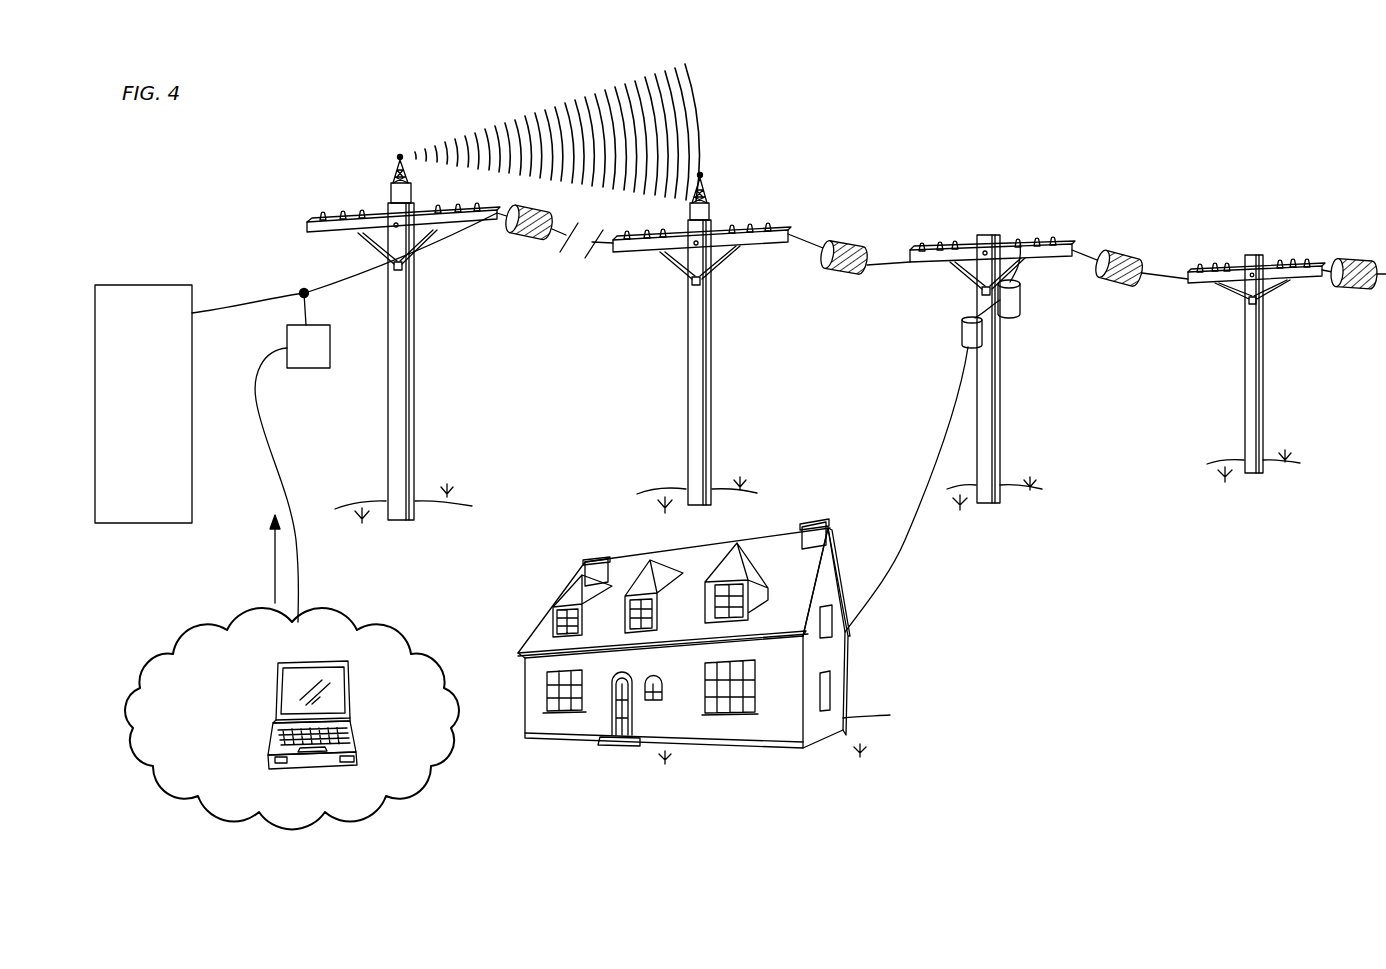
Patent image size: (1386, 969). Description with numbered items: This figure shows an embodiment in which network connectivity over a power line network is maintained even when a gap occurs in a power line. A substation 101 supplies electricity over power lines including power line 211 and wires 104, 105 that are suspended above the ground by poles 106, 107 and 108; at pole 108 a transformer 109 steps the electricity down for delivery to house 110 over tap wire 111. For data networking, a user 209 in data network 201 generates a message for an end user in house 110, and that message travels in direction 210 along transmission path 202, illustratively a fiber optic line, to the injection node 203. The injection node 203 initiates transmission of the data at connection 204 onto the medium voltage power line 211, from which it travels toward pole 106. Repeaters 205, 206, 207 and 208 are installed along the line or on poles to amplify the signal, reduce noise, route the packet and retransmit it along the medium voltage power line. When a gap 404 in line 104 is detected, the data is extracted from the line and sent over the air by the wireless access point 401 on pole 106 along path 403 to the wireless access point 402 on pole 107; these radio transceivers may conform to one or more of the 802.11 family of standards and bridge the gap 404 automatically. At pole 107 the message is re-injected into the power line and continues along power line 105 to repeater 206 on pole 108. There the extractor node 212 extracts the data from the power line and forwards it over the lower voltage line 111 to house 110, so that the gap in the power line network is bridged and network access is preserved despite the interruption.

The substation 101 is at (130, 523).
The wire 104 is at (662, 252).
The wire 105 is at (873, 268).
The pole 106 is at (416, 440).
The pole 107 is at (712, 431).
The pole 108 is at (1001, 455).
The transformer 109 is at (1021, 302).
The house 110 is at (842, 680).
The tap wire 111 is at (912, 545).
The data network 201 is at (376, 632).
The transmission path 202 is at (262, 420).
The injection node 203 is at (307, 368).
The connection 204 is at (303, 289).
The repeater 205 is at (541, 237).
The repeater 206 is at (853, 243).
The repeater 207 is at (1128, 255).
The repeater 208 is at (1360, 261).
The user 209 is at (278, 703).
The direction 210 is at (274, 553).
The power line 211 is at (250, 300).
The extractor node 212 is at (984, 334).
The wireless access point 401 is at (399, 155).
The wireless access point 402 is at (702, 174).
The path 403 is at (561, 108).
The gap 404 is at (571, 251).